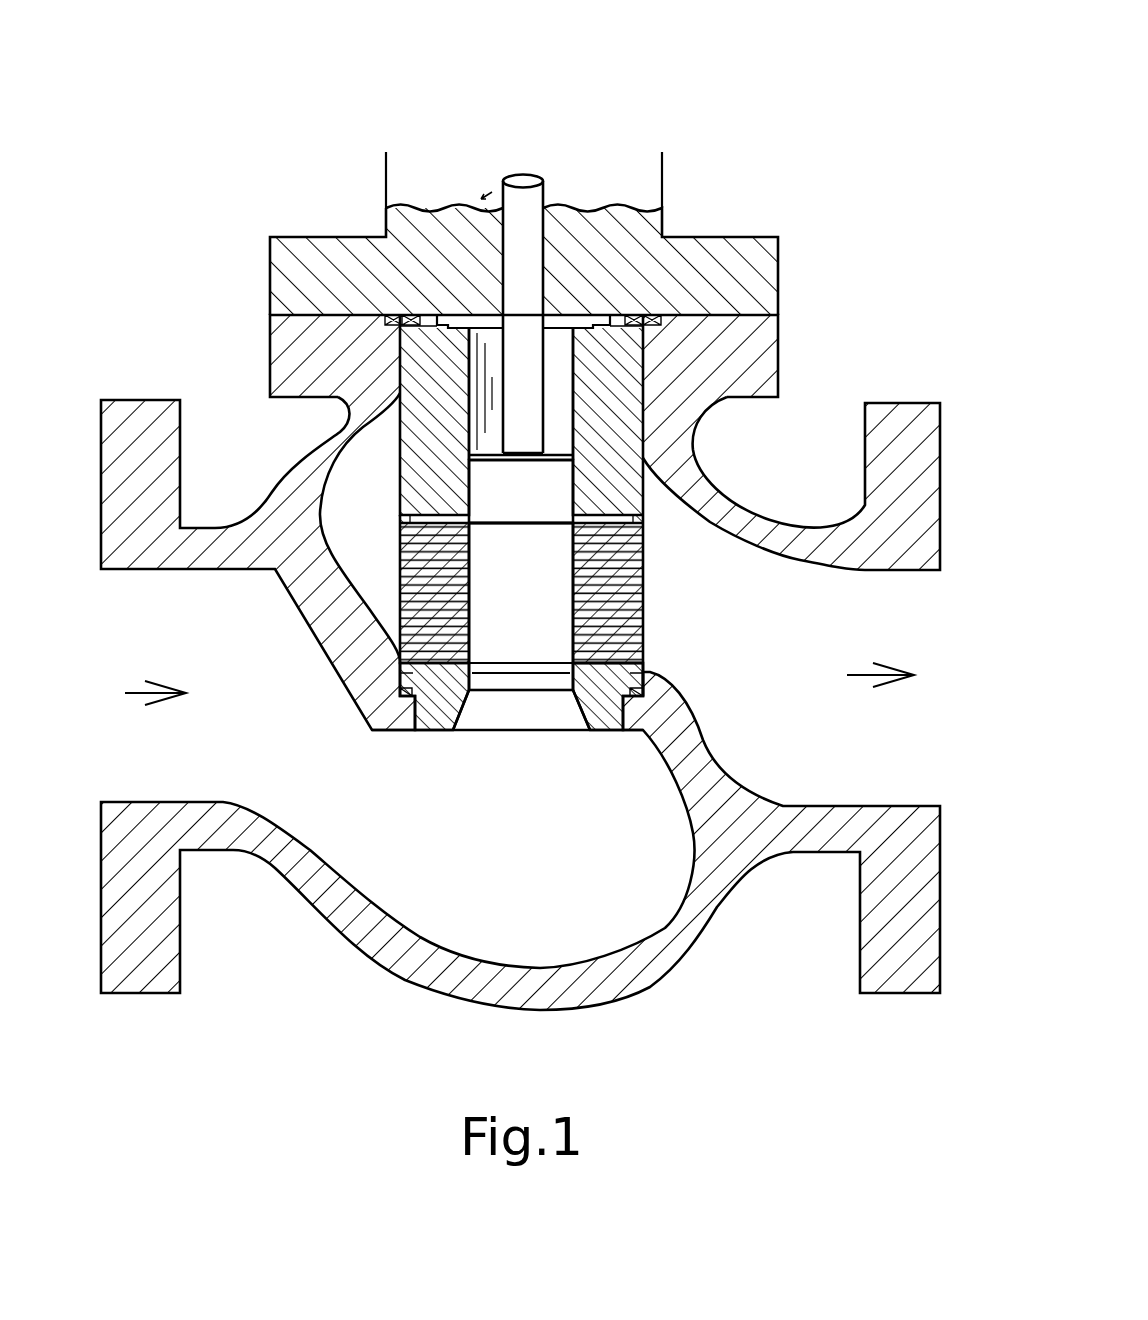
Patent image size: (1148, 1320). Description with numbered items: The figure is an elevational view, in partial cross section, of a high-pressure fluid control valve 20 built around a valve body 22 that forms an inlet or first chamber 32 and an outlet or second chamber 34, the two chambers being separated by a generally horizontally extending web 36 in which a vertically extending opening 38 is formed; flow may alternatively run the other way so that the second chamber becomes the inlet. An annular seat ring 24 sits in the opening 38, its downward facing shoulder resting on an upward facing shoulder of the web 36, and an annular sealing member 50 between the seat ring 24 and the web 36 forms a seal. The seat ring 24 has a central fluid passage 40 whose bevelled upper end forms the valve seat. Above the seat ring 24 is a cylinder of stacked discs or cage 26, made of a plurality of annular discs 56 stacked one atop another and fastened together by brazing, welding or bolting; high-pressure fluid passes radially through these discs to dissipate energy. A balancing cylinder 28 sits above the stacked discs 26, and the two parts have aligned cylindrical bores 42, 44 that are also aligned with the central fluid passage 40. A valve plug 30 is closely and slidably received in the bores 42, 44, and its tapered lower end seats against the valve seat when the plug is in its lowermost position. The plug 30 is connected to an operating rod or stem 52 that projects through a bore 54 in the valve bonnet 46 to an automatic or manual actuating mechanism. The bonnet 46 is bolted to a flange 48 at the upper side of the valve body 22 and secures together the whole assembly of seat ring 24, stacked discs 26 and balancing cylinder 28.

The high-pressure fluid control valve 20 is at (238, 110).
The valve body 22 is at (410, 983).
The seat ring 24 is at (607, 733).
The cylinder of stacked discs (cage) 26 is at (680, 580).
The balancing cylinder 28 is at (643, 380).
The valve plug 30 is at (573, 463).
The first chamber (inlet) 32 is at (373, 873).
The second chamber (outlet) 34 is at (772, 723).
The web 36 is at (384, 715).
The web opening (bore) 38 is at (417, 707).
The central fluid passage 40 is at (595, 728).
The bore of the stacked discs 42 is at (470, 580).
The bore of the balancing cylinder 44 is at (470, 497).
The valve bonnet 46 is at (267, 283).
The flange 48 is at (267, 350).
The sealing member 50 is at (403, 697).
The operating rod or stem 52 is at (545, 237).
The bore in the valve bonnet 54 is at (505, 237).
The annular discs 56 is at (643, 616).